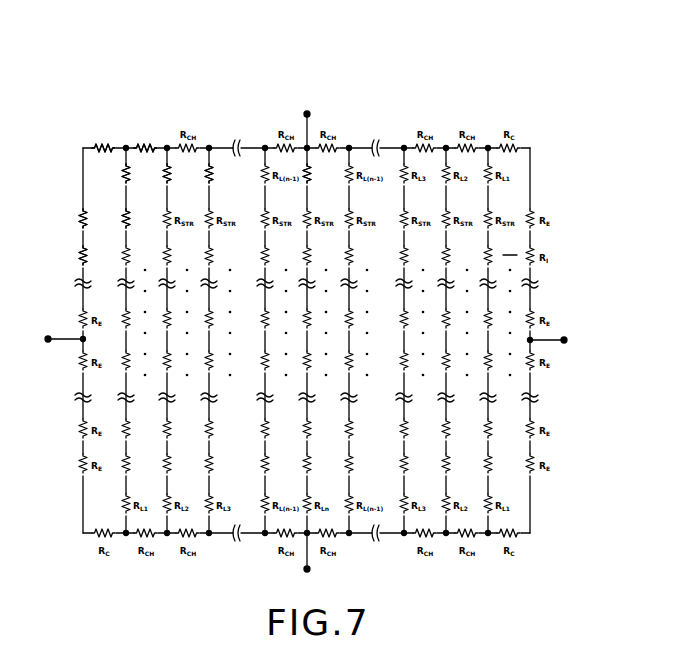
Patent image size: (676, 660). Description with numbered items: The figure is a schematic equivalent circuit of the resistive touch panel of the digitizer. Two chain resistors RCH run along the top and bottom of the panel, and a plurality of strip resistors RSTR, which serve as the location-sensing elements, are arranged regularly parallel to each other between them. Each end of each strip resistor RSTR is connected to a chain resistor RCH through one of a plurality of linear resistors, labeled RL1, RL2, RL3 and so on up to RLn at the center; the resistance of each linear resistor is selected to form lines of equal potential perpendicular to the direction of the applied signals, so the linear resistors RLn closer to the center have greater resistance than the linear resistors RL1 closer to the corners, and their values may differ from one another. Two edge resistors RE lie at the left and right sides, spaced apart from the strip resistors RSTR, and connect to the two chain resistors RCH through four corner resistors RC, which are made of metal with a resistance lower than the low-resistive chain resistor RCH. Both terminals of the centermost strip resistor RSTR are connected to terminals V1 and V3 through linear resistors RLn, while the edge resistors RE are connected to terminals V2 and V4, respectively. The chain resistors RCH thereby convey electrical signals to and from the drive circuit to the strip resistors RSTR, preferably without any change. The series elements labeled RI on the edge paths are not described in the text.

The terminal V1 is at (306, 121).
The terminal V2 is at (556, 341).
The terminal V3 is at (306, 563).
The terminal V4 is at (56, 340).
The corner resistor RC is at (103, 141).
The chain resistor RCH is at (145, 141).
The linear resistor RL1 is at (135, 173).
The linear resistor RL2 is at (176, 173).
The linear resistor RL3 is at (218, 173).
The linear resistor RLn is at (316, 173).
The strip resistor RSTR is at (137, 218).
The edge resistor RE is at (90, 218).
The internal resistance RI is at (89, 255).